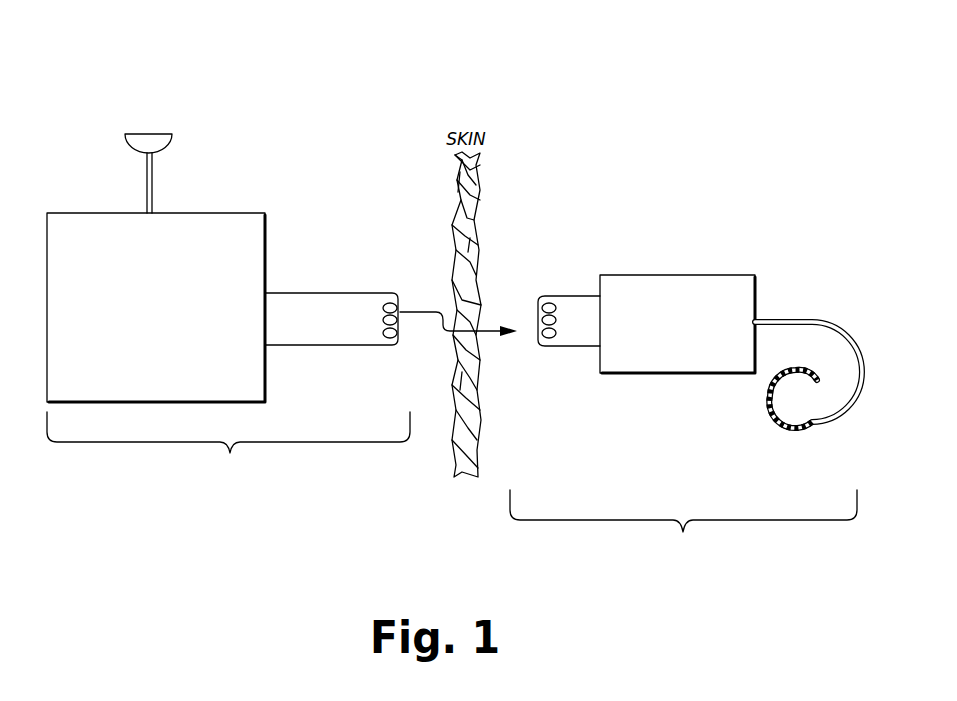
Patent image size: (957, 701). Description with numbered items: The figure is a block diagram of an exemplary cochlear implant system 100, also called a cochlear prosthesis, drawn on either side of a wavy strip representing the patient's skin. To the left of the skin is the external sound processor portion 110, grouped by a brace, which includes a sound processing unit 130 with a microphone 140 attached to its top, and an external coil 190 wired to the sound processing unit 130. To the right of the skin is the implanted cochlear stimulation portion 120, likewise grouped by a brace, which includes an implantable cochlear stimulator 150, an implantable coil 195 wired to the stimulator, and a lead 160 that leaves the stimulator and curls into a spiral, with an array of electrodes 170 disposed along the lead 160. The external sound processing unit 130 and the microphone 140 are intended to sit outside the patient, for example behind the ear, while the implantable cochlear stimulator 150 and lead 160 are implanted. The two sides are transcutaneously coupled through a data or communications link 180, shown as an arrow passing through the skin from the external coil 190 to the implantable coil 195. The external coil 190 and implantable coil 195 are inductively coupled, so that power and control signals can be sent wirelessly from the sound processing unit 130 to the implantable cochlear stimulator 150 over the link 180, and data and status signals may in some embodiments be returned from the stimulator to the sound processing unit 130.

The cochlear implant system 100 is at (496, 44).
The external sound processor portion 110 is at (228, 448).
The implanted cochlear stimulation portion 120 is at (683, 527).
The sound processing unit 130 is at (224, 213).
The microphone 140 is at (148, 133).
The implantable cochlear stimulator 150 is at (690, 275).
The lead 160 is at (836, 424).
The array of electrodes 170 is at (776, 410).
The communications link 180 is at (488, 326).
The external coil 190 is at (393, 346).
The implantable coil 195 is at (548, 347).